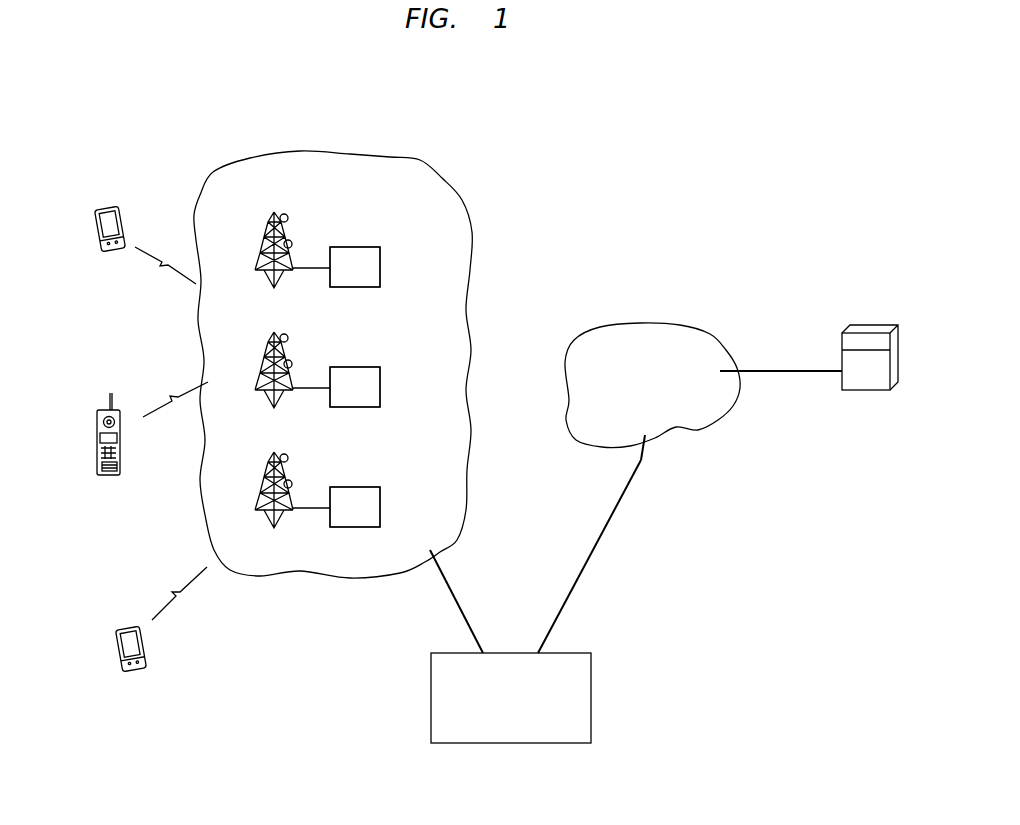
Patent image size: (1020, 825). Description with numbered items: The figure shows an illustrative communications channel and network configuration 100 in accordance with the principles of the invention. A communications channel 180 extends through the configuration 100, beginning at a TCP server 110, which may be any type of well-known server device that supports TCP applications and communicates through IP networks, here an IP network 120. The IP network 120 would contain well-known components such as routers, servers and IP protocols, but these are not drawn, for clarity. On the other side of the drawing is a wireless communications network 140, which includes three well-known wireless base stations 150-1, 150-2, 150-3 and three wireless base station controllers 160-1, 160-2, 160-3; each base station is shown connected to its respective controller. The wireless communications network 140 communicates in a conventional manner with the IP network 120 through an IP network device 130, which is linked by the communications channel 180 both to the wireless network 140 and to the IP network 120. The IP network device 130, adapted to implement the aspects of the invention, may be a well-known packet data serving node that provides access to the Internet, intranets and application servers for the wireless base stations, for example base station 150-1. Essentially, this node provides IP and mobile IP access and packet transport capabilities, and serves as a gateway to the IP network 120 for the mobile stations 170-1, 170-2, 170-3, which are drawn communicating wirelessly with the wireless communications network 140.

The communications channel and network configuration 100 is at (677, 153).
The TCP server 110 is at (877, 324).
The IP network 120 is at (656, 324).
The IP network device 130 is at (573, 652).
The wireless communications network 140 is at (420, 160).
The wireless base station 150-1 is at (286, 213).
The wireless base station 150-2 is at (286, 333).
The wireless base station 150-3 is at (286, 453).
The wireless base station controller 160-1 is at (362, 248).
The wireless base station controller 160-2 is at (362, 368).
The wireless base station controller 160-3 is at (362, 488).
The mobile station 170-1 is at (110, 252).
The mobile station 170-2 is at (105, 477).
The mobile station 170-3 is at (127, 671).
The communications channel 180 is at (767, 370).